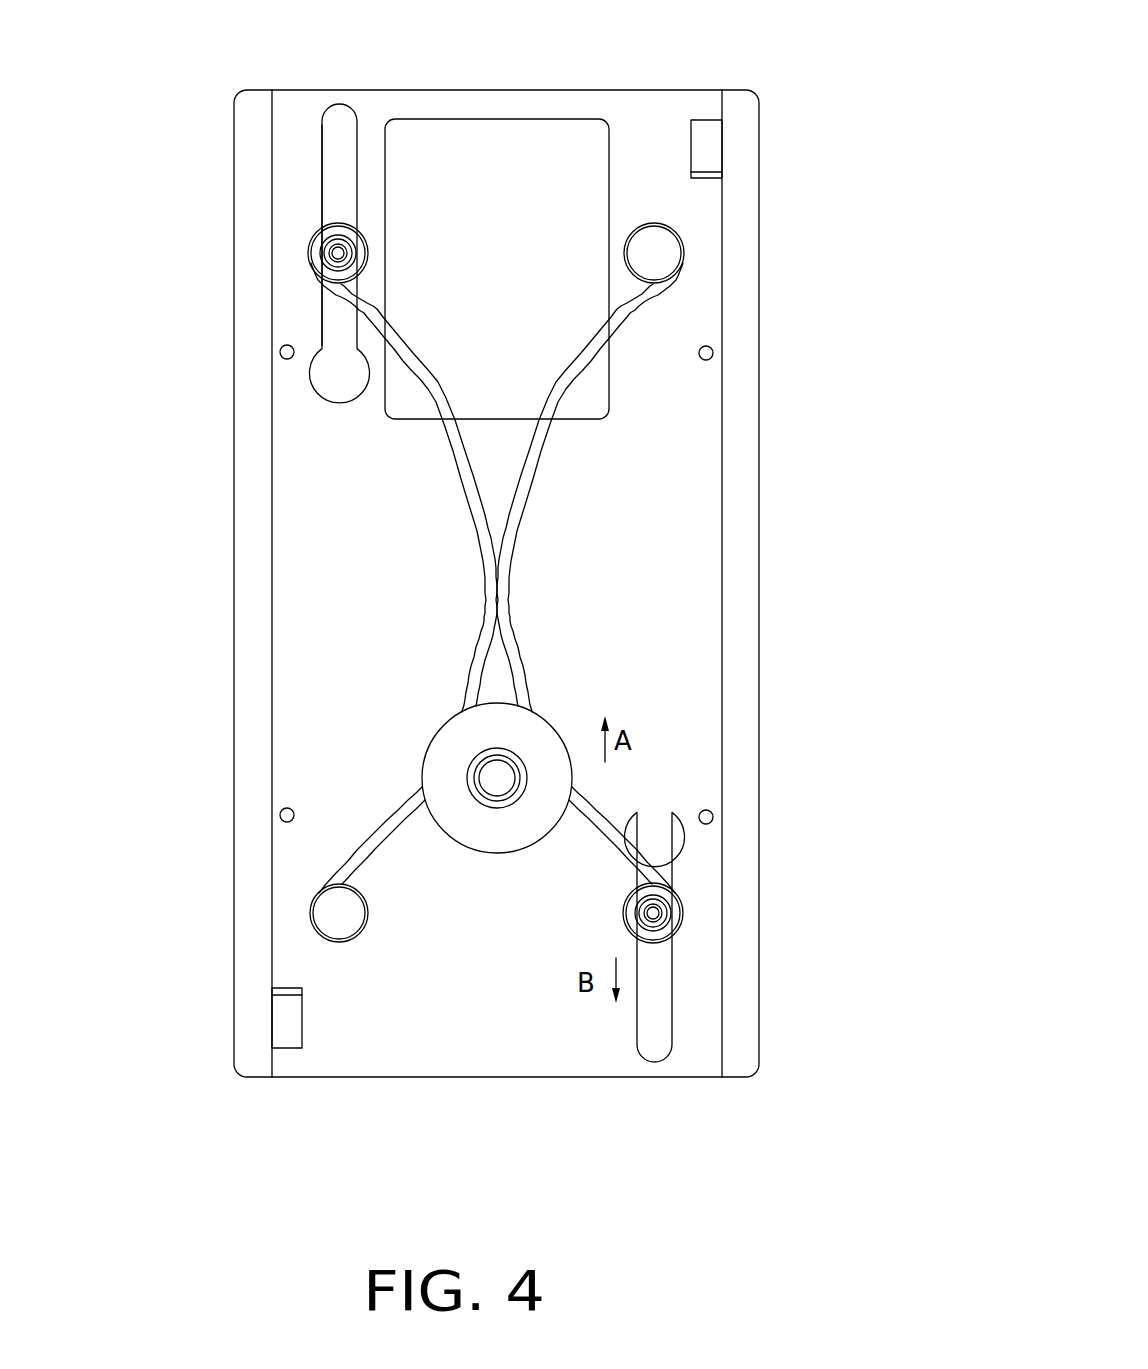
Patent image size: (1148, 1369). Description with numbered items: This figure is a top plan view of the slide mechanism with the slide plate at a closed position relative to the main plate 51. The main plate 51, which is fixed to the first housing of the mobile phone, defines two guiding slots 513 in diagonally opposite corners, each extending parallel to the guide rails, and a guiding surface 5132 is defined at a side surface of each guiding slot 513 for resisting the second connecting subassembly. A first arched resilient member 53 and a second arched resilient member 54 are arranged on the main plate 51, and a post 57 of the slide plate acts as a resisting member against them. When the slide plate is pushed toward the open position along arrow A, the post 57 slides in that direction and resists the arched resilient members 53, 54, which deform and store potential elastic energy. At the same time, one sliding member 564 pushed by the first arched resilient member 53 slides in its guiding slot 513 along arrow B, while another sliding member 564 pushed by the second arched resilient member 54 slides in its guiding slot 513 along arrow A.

The main plate 51 is at (648, 110).
The guiding slot 513 is at (338, 120).
The guiding surface 5132 is at (322, 167).
The sliding member 564 is at (310, 237).
The second arched resilient member 54 is at (462, 442).
The first arched resilient member 53 is at (533, 441).
The post 57 is at (485, 835).